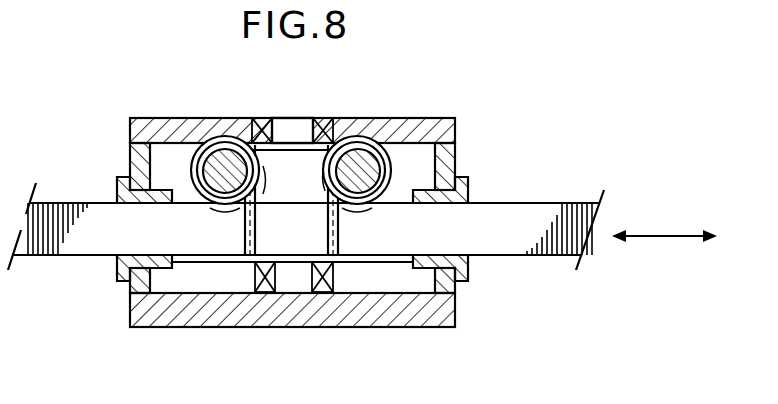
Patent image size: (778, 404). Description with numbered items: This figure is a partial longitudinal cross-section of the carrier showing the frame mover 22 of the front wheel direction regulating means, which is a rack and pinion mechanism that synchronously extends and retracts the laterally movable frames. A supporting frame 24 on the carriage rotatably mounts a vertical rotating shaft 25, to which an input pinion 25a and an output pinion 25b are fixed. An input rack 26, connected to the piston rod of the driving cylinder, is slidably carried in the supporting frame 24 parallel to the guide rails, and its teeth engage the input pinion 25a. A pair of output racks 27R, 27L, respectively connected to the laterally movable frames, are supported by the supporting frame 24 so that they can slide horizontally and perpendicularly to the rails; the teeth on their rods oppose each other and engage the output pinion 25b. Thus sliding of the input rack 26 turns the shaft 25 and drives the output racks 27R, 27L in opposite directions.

The frame mover 22 is at (288, 116).
The supporting frame 24 is at (148, 116).
The vertical rotating shaft 25 is at (292, 275).
The input pinion 25a is at (247, 228).
The output pinion 25b is at (294, 177).
The input rack 26 is at (498, 227).
The output rack 27L is at (220, 168).
The output rack 27R is at (412, 143).